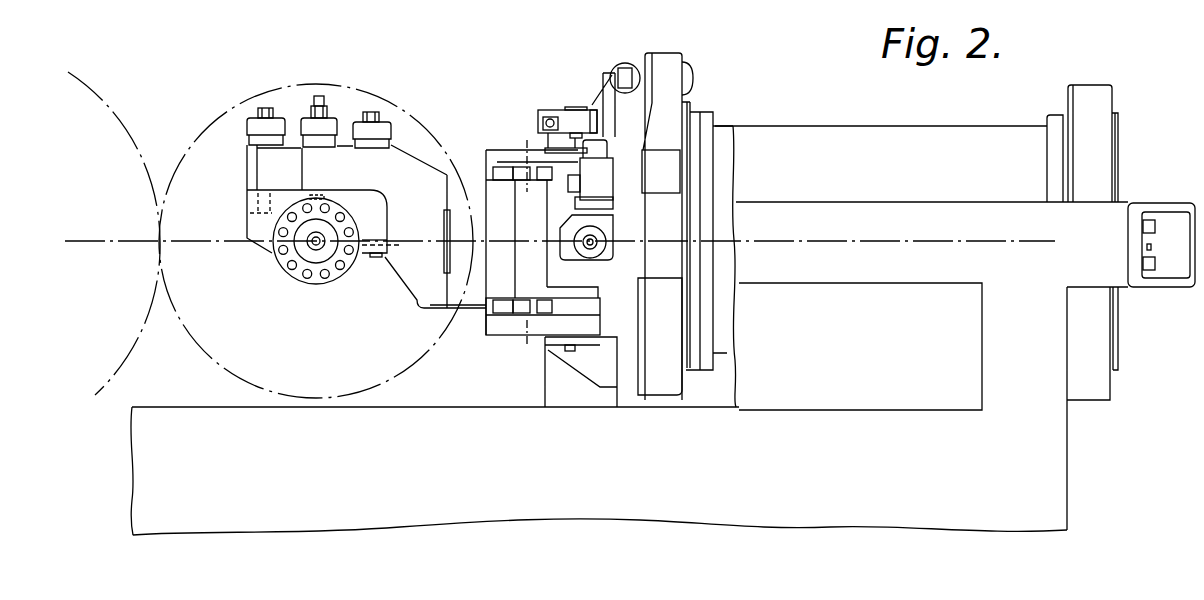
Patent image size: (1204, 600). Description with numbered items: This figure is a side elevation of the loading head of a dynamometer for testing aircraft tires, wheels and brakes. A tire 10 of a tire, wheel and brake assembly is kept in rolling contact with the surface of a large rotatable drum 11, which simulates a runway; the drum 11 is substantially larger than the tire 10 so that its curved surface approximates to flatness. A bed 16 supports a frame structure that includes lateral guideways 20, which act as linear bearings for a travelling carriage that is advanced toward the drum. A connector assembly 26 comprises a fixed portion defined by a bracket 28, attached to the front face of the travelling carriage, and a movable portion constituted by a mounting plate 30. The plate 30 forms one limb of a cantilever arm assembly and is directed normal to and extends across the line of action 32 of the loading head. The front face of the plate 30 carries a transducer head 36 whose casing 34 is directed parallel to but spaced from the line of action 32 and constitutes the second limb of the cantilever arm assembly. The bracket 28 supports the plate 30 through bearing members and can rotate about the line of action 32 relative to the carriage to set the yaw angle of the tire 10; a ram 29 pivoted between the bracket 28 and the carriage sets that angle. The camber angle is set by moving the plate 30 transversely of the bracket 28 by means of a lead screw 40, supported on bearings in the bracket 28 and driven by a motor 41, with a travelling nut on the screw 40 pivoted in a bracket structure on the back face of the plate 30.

The tire 10 is at (213, 125).
The rotatable drum 11 is at (100, 97).
The bed 16 is at (858, 468).
The lateral guideways 20 is at (862, 272).
The connector assembly 26 is at (527, 278).
The bracket 28 is at (614, 352).
The ram 29 is at (629, 72).
The mounting plate 30 is at (416, 309).
The line of action 32 is at (400, 262).
The casing 34 is at (436, 216).
The transducer head 36 is at (320, 287).
The lead screw 40 is at (610, 237).
The motor 41 is at (597, 187).